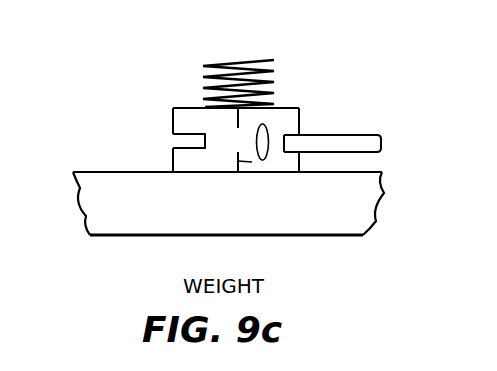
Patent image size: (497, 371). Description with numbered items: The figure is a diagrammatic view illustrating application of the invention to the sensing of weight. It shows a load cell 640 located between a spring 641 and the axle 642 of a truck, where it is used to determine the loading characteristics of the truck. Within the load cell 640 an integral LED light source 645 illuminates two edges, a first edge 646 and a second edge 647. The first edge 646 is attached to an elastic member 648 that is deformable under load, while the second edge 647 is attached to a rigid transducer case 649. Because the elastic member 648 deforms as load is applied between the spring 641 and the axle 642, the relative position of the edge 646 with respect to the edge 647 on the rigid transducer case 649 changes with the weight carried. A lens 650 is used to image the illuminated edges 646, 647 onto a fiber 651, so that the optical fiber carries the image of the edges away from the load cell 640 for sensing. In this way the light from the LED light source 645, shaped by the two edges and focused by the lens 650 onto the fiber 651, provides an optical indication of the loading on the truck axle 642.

The load cell 640 is at (102, 112).
The spring 641 is at (272, 70).
The axle 642 is at (235, 214).
The LED light source 645 is at (178, 140).
The edge 646 is at (237, 118).
The edge 647 is at (252, 162).
The elastic member 648 is at (263, 108).
The rigid transducer case 649 is at (173, 158).
The lens 650 is at (314, 133).
The fiber 651 is at (380, 143).